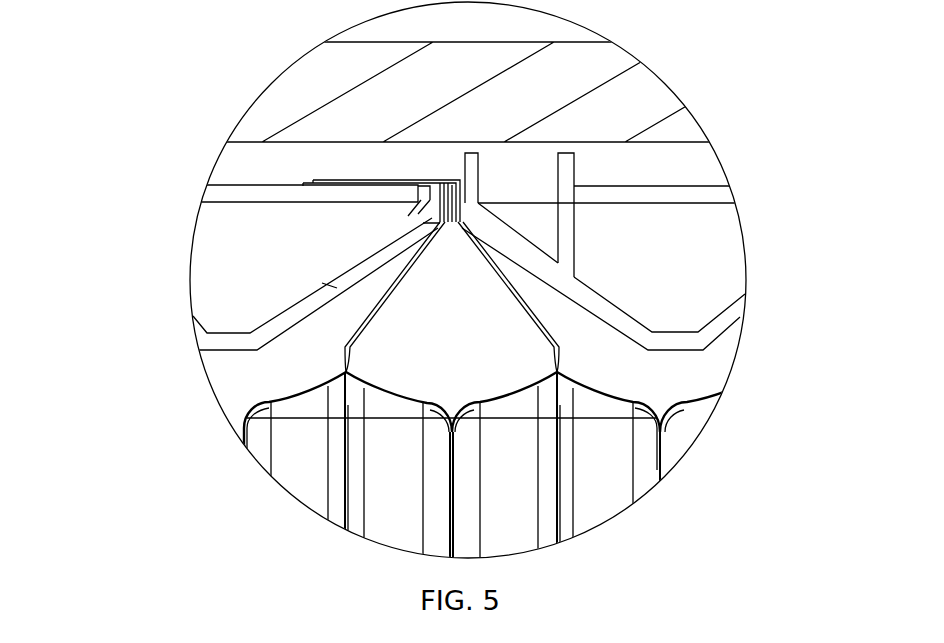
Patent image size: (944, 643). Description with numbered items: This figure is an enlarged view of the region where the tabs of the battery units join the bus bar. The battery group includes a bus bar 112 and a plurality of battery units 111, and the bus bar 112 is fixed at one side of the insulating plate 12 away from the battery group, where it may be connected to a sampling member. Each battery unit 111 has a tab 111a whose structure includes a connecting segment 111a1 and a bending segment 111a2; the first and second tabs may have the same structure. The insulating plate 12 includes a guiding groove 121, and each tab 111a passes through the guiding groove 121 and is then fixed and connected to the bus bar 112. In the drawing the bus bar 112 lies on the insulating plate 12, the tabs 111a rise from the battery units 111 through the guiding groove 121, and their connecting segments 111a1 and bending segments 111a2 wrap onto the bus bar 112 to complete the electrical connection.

The insulating plate 12 is at (342, 266).
The bus bar 112 is at (263, 197).
The bending segment 111a2 is at (378, 184).
The connecting segment 111a1 is at (458, 195).
The guiding groove 121 is at (463, 216).
The tab 111a is at (355, 332).
The battery unit 111 is at (269, 402).